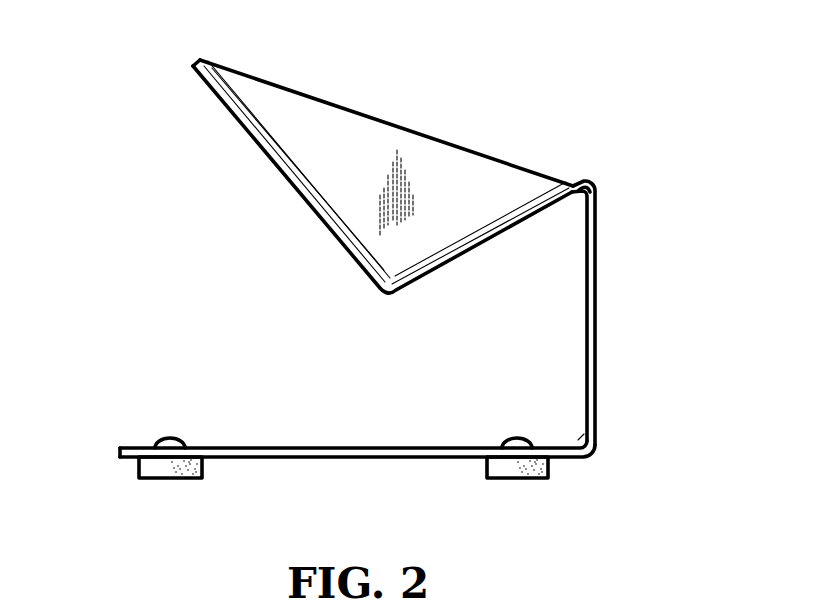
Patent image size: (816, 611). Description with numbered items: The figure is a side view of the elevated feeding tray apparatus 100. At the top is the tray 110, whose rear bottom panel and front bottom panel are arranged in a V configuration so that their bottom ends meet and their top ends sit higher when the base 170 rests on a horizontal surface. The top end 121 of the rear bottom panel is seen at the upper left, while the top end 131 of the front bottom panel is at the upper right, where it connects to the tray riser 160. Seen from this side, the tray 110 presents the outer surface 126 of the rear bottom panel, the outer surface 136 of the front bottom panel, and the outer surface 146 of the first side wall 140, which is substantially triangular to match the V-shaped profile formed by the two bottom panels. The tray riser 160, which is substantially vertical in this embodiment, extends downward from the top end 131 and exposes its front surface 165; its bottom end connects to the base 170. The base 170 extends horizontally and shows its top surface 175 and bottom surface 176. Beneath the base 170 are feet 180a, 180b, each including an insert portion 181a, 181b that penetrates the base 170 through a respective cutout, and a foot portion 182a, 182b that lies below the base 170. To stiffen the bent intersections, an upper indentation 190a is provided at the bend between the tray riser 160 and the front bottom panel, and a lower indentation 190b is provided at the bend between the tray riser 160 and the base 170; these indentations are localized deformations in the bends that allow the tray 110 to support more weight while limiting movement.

The elevated feeding tray apparatus 100 is at (576, 70).
The tray 110 is at (414, 102).
The top end 121 is at (193, 62).
The outer surface 126 is at (238, 160).
The top end 131 is at (580, 168).
The outer surface 136 is at (446, 273).
The first side wall 140 is at (272, 110).
The outer surface 146 is at (372, 174).
The tray riser 160 is at (597, 330).
The front surface 165 is at (610, 396).
The base 170 is at (330, 447).
The top surface 175 is at (288, 427).
The bottom surface 176 is at (437, 464).
The foot 180a is at (548, 458).
The foot 180b is at (146, 455).
The insert portion 181a is at (515, 438).
The insert portion 181b is at (170, 438).
The foot portion 182a is at (513, 478).
The foot portion 182b is at (192, 506).
The upper indentation 190a is at (580, 194).
The lower indentation 190b is at (583, 441).